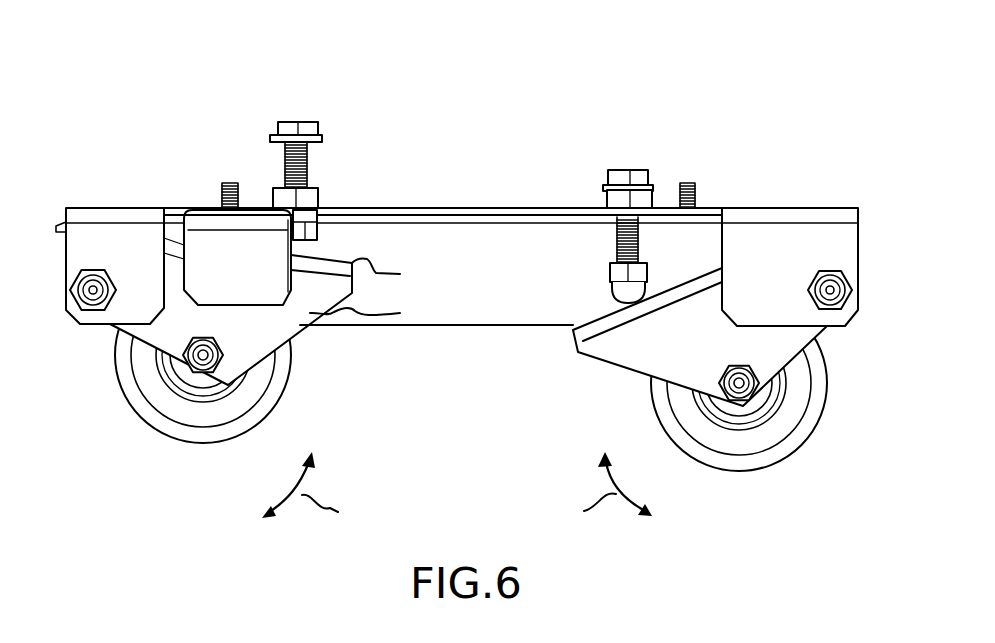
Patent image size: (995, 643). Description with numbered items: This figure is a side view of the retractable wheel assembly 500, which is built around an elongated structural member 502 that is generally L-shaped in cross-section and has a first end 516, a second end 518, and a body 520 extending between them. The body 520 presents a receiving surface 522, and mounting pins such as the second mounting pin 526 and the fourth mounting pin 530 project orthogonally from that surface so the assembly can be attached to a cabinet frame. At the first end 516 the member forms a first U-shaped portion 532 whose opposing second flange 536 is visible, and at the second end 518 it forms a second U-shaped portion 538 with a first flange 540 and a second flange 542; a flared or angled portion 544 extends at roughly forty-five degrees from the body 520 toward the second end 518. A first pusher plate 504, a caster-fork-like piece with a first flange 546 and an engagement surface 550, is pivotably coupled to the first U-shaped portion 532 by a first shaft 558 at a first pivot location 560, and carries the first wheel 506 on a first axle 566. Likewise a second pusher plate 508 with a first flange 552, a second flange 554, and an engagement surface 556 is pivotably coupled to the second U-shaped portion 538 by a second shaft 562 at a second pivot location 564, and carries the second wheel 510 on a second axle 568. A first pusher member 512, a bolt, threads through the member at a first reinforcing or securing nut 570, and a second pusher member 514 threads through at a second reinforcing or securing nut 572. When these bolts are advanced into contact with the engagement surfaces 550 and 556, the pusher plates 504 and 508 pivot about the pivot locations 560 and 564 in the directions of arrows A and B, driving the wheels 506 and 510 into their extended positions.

The retractable wheel assembly 500 is at (715, 92).
The elongated structural member 502 is at (456, 207).
The first pusher plate 504 is at (648, 382).
The first wheel 506 is at (797, 450).
The second pusher plate 508 is at (306, 330).
The second wheel 510 is at (286, 422).
The first pusher member 512 is at (645, 169).
The second pusher member 514 is at (318, 124).
The first end 516 is at (815, 190).
The second end 518 is at (72, 190).
The body 520 is at (556, 196).
The receiving surface 522 is at (502, 207).
The second mounting pin 526 is at (693, 182).
The fourth mounting pin 530 is at (230, 182).
The first U-shaped portion 532 is at (872, 213).
The second flange 536 is at (858, 312).
The second U-shaped portion 538 is at (50, 212).
The first flange 540 is at (135, 207).
The second flange 542 is at (66, 272).
The flared or angled portion 544 is at (158, 362).
The first flange 546 is at (606, 363).
The engagement surface 550 is at (594, 321).
The first flange 552 is at (140, 352).
The second flange 554 is at (362, 312).
The engagement surface 556 is at (385, 263).
The first shaft 558 is at (848, 279).
The first pivot location 560 is at (812, 284).
The second shaft 562 is at (78, 291).
The second pivot location 564 is at (93, 294).
The first axle 566 is at (739, 386).
The second axle 568 is at (205, 360).
The first reinforcing or securing nut 570 is at (605, 190).
The second reinforcing or securing nut 572 is at (320, 195).